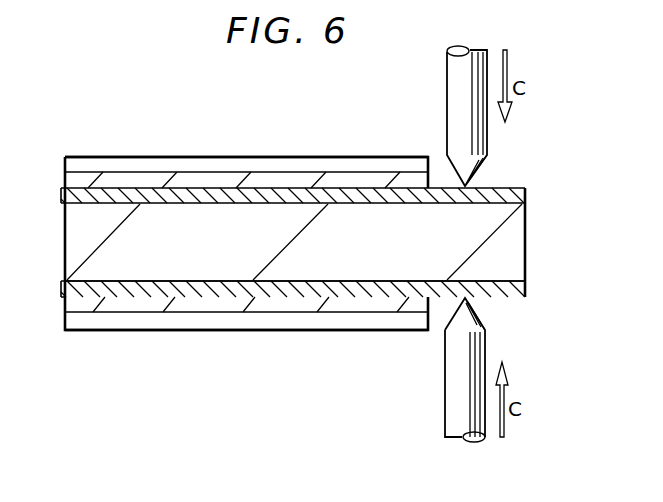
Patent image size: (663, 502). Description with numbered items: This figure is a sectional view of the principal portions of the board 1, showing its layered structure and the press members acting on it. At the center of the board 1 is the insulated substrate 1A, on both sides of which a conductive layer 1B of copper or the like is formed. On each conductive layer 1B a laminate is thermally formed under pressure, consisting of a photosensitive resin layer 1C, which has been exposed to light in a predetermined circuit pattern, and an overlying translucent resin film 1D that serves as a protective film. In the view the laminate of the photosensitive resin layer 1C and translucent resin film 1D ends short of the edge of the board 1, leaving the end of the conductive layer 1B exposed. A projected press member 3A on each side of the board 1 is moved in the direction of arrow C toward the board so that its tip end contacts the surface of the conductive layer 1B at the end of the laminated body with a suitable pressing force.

The board 1 is at (81, 243).
The insulated substrate 1A is at (88, 228).
The conductive layer 1B is at (156, 190).
The photosensitive resin layer 1C is at (208, 182).
The translucent resin film 1D is at (290, 167).
The projected press member 3A is at (453, 110).